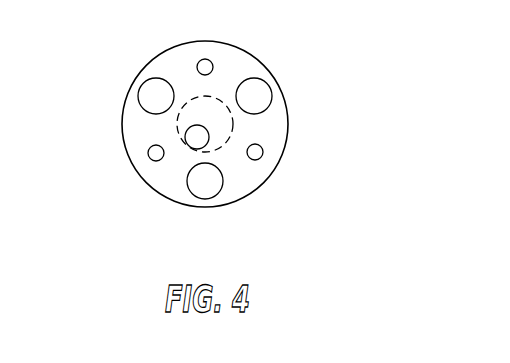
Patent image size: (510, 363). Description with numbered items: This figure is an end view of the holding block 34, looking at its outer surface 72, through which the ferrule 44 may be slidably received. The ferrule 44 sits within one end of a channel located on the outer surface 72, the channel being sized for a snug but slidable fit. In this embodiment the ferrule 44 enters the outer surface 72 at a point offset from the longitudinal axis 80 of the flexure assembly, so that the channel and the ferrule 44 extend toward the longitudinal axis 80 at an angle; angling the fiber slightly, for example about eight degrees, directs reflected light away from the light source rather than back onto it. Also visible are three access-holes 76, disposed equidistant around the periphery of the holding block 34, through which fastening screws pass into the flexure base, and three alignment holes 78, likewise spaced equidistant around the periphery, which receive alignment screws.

The holding block 34 is at (244, 118).
The ferrule 44 is at (185, 141).
The outer surface 72 is at (250, 56).
The access-holes 76 is at (263, 97).
The alignment holes 78 is at (255, 160).
The longitudinal axis 80 is at (203, 125).